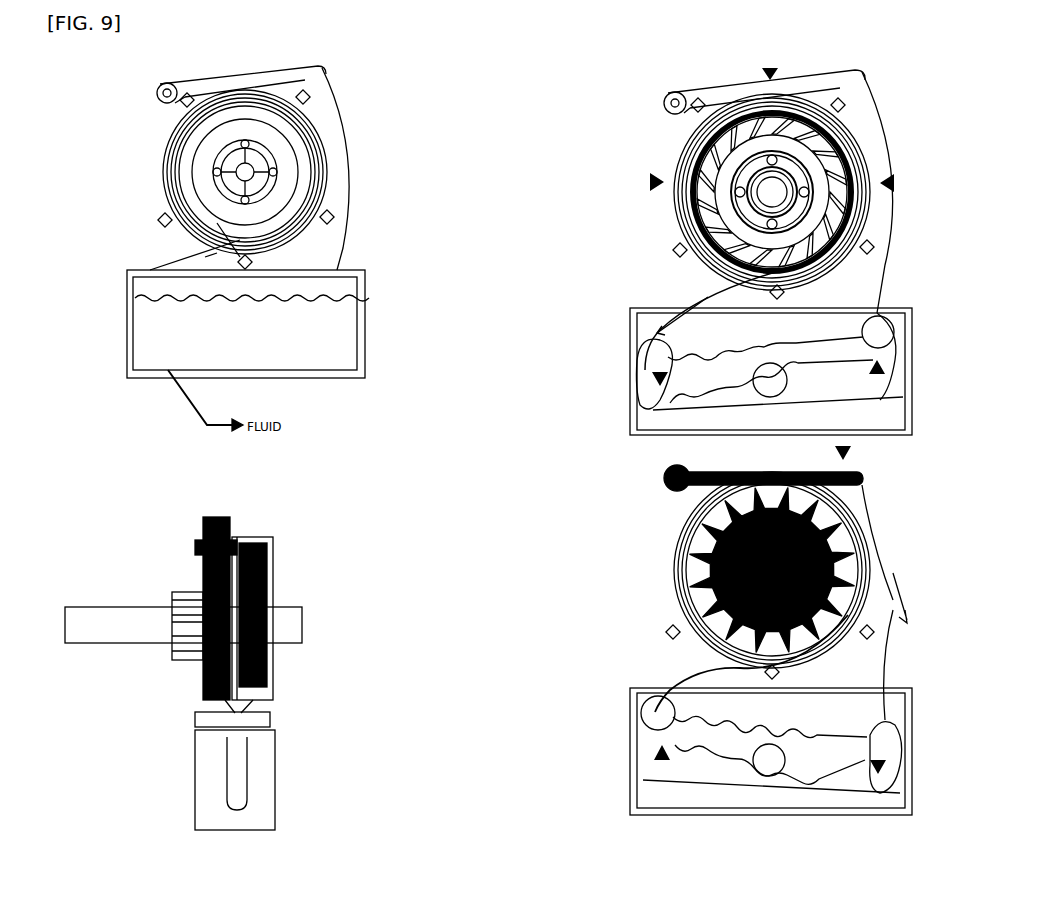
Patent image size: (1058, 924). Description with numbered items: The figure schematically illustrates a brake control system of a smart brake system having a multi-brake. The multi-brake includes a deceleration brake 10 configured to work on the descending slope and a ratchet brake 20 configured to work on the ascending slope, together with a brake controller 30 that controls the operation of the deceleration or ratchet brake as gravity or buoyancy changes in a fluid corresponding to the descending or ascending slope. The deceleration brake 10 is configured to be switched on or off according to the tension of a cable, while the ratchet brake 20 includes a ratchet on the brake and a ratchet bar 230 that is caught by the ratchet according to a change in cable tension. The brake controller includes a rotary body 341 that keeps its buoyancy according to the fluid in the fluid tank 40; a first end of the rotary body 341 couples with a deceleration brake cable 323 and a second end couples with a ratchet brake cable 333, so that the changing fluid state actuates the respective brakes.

The deceleration brake 10 is at (250, 543).
The ratchet brake 20 is at (700, 152).
The brake controller 30 is at (700, 560).
The fluid tank 40 is at (360, 333).
The ratchet bar 230 is at (157, 93).
The deceleration brake cable 323 is at (213, 258).
The ratchet brake cable 333 is at (340, 250).
The rotary body 341 is at (847, 390).